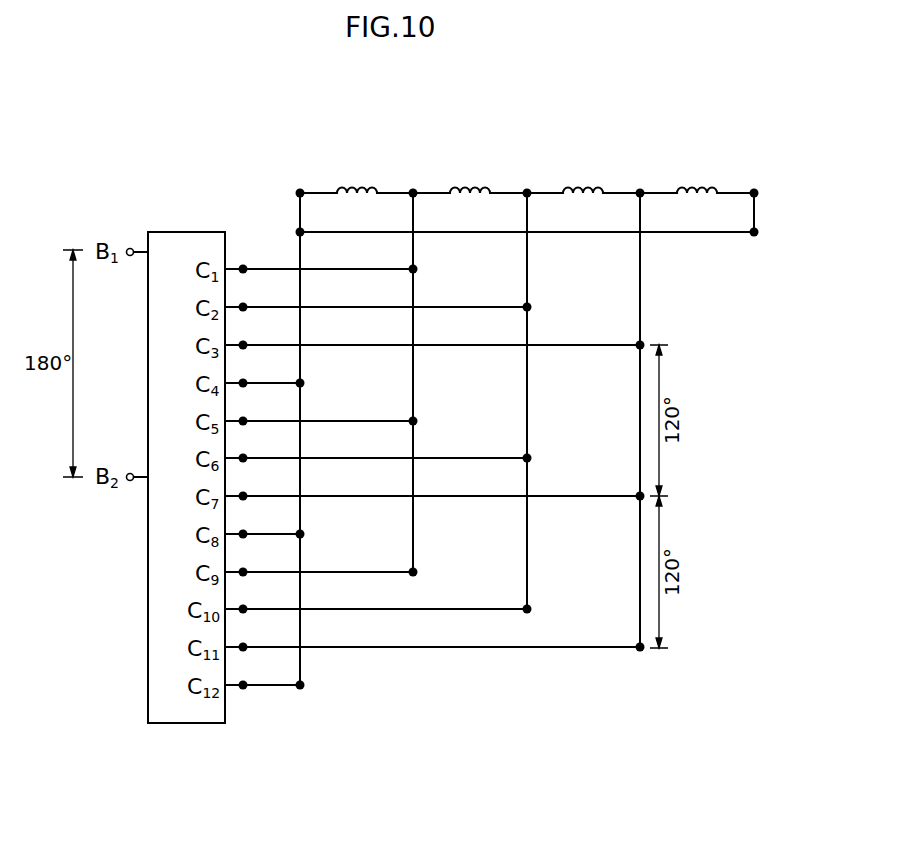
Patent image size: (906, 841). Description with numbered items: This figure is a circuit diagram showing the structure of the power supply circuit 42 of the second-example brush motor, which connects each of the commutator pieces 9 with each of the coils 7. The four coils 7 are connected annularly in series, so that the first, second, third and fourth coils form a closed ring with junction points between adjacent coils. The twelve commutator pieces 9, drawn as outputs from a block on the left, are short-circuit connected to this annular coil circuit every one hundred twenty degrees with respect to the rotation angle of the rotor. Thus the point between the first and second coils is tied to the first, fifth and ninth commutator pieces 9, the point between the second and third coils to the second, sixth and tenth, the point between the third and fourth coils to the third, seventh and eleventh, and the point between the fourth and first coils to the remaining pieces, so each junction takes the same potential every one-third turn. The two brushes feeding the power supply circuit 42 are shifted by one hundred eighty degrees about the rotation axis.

The power supply circuit 42 is at (198, 186).
The coils 7 is at (757, 171).
The commutator pieces 9 is at (263, 703).